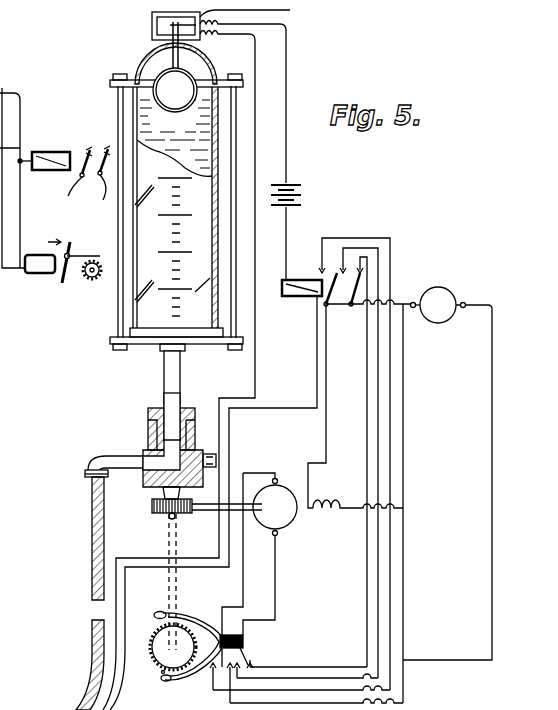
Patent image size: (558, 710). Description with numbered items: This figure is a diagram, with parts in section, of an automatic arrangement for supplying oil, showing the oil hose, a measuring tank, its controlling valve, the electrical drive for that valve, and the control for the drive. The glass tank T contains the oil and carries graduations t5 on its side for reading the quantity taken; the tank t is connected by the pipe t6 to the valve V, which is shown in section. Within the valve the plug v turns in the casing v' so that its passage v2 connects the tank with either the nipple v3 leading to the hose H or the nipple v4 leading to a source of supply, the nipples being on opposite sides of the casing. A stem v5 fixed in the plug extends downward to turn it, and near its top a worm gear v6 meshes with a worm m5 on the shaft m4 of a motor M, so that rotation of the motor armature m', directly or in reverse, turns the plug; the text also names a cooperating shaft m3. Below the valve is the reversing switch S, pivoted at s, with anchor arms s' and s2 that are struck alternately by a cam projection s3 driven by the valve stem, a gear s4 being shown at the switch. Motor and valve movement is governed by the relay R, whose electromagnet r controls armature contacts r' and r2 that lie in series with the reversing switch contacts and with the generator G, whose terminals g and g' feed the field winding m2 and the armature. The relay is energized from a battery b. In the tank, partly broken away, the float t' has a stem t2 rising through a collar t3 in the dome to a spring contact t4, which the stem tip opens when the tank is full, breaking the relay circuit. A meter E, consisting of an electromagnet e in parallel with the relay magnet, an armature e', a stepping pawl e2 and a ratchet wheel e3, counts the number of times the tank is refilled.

The tank t is at (176, 202).
The float t' is at (175, 67).
The stem t2 is at (209, 60).
The collar t3 is at (205, 42).
The spring contact t4 is at (232, 23).
The graduations t5 is at (179, 247).
The pipe t6 is at (181, 373).
The glass tank T is at (175, 207).
The relay R is at (177, 214).
The electromagnet r is at (177, 236).
The armature contact r' is at (202, 226).
The armature contact r2 is at (230, 234).
The meter E is at (63, 269).
The electromagnet e is at (40, 264).
The armature e' is at (71, 266).
The meter pawl e2 is at (88, 256).
The ratchet wheel e3 is at (101, 274).
The battery b is at (296, 190).
The valve V is at (148, 428).
The valve plug v is at (196, 432).
The casing v' is at (216, 435).
The passage v2 is at (148, 452).
The nipple v3 is at (107, 486).
The nipple v4 is at (216, 458).
The stem v5 is at (180, 546).
The worm gear v6 is at (156, 506).
The hose H is at (90, 587).
The motor M is at (297, 522).
The armature winding m' is at (305, 406).
The field winding m2 is at (358, 493).
The shaft m3 is at (243, 472).
The shaft m4 is at (225, 518).
The worm m5 is at (166, 518).
The generator G is at (447, 461).
The terminal g is at (447, 482).
The terminal g' is at (422, 293).
The reversing switch S is at (180, 652).
The pivot s is at (231, 661).
The anchor arm s' is at (174, 691).
The anchor arm s2 is at (170, 615).
The cam projection s3 is at (161, 675).
The switch gear s4 is at (156, 652).